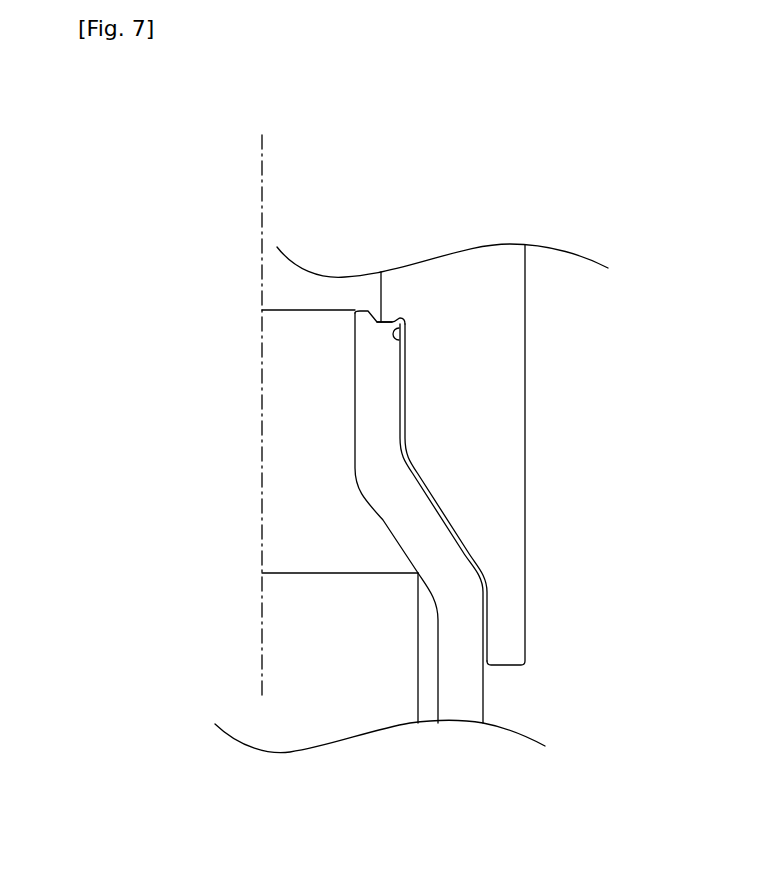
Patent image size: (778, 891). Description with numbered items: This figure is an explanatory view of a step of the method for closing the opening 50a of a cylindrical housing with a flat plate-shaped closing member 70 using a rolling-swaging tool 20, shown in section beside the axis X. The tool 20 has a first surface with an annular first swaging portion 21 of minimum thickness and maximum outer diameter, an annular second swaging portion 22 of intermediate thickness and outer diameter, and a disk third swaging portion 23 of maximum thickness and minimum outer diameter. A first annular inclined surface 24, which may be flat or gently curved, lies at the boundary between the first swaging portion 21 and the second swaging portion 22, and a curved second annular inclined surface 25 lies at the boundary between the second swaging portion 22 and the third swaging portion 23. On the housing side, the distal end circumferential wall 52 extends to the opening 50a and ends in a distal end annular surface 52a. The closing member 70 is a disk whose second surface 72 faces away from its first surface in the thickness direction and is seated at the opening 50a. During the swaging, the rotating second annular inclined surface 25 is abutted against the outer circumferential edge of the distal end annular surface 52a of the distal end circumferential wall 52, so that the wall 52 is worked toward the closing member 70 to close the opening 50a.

The axis X is at (263, 400).
The panel member 20 is at (563, 455).
The annular first swaging portion 21 is at (510, 590).
The annular second swaging portion 22 is at (402, 470).
The disk third swaging portion 23 is at (380, 297).
The first annular inclined surface 24 is at (446, 510).
The second annular inclined surface 25 is at (410, 338).
The opening 50a is at (320, 310).
The distal end circumferential wall 52 is at (468, 695).
The distal end annular surface 52a is at (383, 320).
The closing member 70 is at (273, 641).
The second surface 72 is at (300, 573).